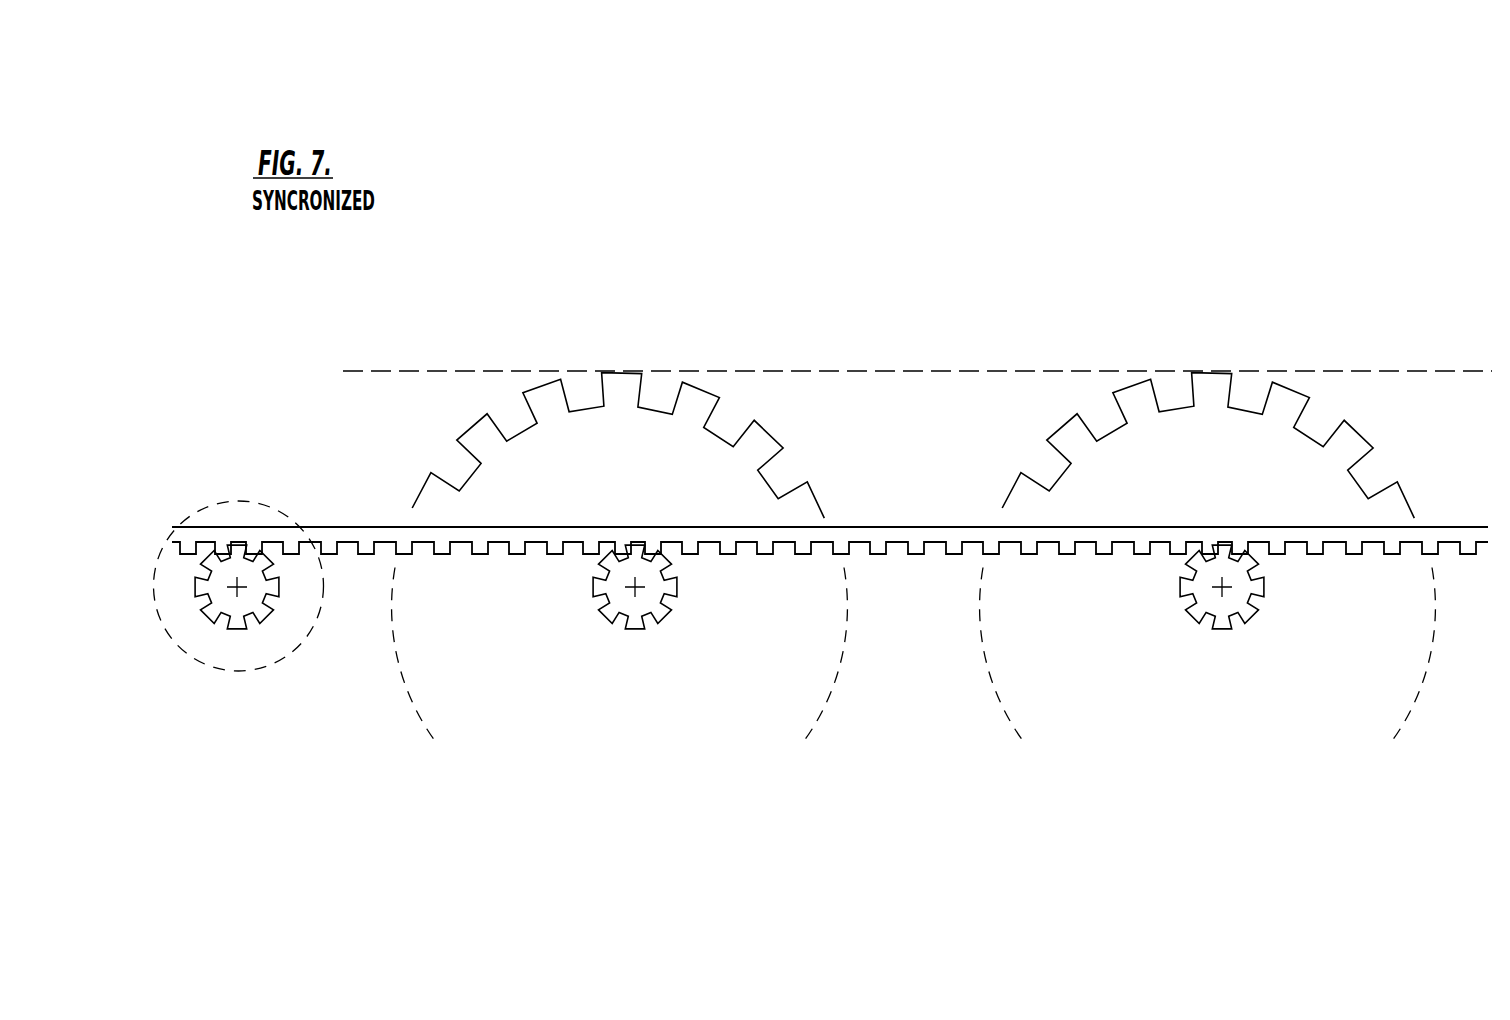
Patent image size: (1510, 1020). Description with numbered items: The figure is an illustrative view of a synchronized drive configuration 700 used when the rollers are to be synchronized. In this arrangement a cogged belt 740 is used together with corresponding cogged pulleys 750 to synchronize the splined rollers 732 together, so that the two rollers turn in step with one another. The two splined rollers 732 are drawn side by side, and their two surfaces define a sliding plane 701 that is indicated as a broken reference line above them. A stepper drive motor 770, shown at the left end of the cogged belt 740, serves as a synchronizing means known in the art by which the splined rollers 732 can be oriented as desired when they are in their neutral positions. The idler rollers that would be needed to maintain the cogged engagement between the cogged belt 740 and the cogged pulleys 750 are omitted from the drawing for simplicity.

The synchronized drive configuration 700 is at (1288, 129).
The sliding plane 701 is at (832, 370).
The splined roller 732 is at (623, 405).
The cogged belt 740 is at (915, 526).
The cogged pulley 750 is at (613, 605).
The stepper drive motor 770 is at (232, 669).